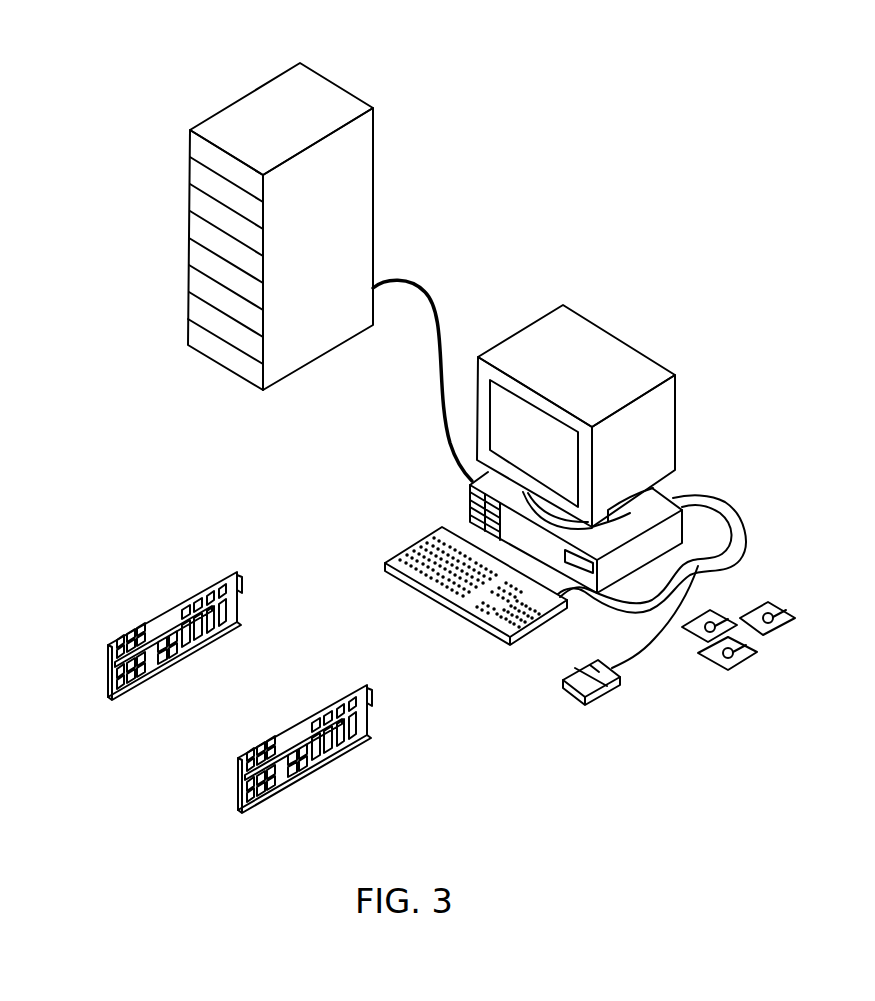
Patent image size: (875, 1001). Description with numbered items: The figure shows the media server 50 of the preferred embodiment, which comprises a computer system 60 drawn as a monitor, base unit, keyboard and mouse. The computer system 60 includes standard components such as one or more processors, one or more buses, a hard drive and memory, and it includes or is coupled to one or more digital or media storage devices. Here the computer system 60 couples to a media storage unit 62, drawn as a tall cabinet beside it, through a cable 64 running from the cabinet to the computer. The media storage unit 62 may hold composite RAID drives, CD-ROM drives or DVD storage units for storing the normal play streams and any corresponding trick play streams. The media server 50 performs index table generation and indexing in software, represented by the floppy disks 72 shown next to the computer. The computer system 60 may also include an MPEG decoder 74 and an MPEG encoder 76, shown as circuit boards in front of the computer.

The media server 50 is at (670, 318).
The computer system 60 is at (575, 325).
The media storage unit 62 is at (188, 208).
The cable 64 is at (422, 290).
The floppy disks 72 is at (771, 607).
The MPEG decoder 74 is at (105, 678).
The MPEG encoder 76 is at (236, 792).